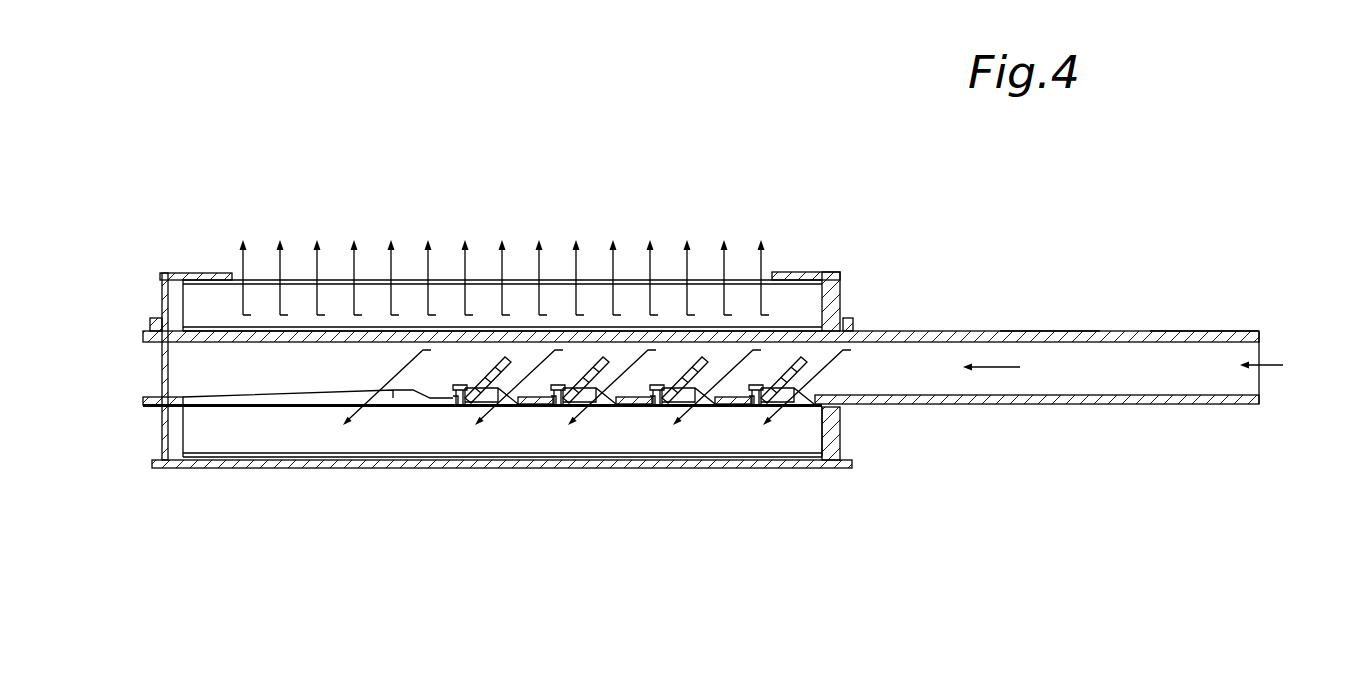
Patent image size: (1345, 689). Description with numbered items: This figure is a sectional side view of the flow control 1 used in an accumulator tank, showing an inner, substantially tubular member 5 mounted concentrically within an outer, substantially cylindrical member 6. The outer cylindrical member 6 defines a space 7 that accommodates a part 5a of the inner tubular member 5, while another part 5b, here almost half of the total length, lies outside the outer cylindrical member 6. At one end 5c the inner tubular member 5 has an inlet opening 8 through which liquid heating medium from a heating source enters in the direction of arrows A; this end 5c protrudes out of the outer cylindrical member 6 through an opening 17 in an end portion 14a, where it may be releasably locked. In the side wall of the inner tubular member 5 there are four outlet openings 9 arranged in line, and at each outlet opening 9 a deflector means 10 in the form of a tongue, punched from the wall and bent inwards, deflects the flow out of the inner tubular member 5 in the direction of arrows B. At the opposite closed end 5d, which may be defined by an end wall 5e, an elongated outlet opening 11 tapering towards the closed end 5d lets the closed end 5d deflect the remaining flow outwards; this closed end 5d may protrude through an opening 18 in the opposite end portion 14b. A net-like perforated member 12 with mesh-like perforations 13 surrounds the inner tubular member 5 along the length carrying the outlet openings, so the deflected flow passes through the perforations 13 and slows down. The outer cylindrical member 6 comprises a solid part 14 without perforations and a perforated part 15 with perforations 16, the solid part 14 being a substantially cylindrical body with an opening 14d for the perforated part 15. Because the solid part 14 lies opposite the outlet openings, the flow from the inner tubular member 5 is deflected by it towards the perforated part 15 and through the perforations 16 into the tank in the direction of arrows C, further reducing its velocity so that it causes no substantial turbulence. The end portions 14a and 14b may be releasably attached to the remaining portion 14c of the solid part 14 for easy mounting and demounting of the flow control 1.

The flow control 1 is at (876, 217).
The inner tubular member 5 is at (955, 331).
The part of the inner tubular member 5a is at (485, 331).
The part of the inner tubular member 5b is at (1048, 331).
The end of the inner tubular member 5c is at (1235, 331).
The closed end of the inner tubular member 5d is at (175, 408).
The end wall 5e is at (165, 378).
The outer cylindrical member 6 is at (390, 470).
The space 7 is at (832, 440).
The inlet opening 8 is at (1262, 348).
The outlet opening 9 is at (705, 398).
The deflector means 10 is at (673, 375).
The elongated outlet opening 11 is at (395, 410).
The perforated member 12 is at (673, 326).
The perforations 13 is at (660, 400).
The solid part 14 is at (475, 468).
The end portion 14a is at (846, 277).
The end portion 14b is at (148, 280).
The remaining portion of the solid part 14c is at (548, 468).
The opening 14d is at (763, 274).
The perforated part 15 is at (335, 278).
The perforations 16 is at (410, 280).
The opening 17 is at (840, 384).
The opening 18 is at (168, 345).
The arrows A is at (1004, 414).
The arrows B is at (557, 330).
The arrows C is at (463, 258).